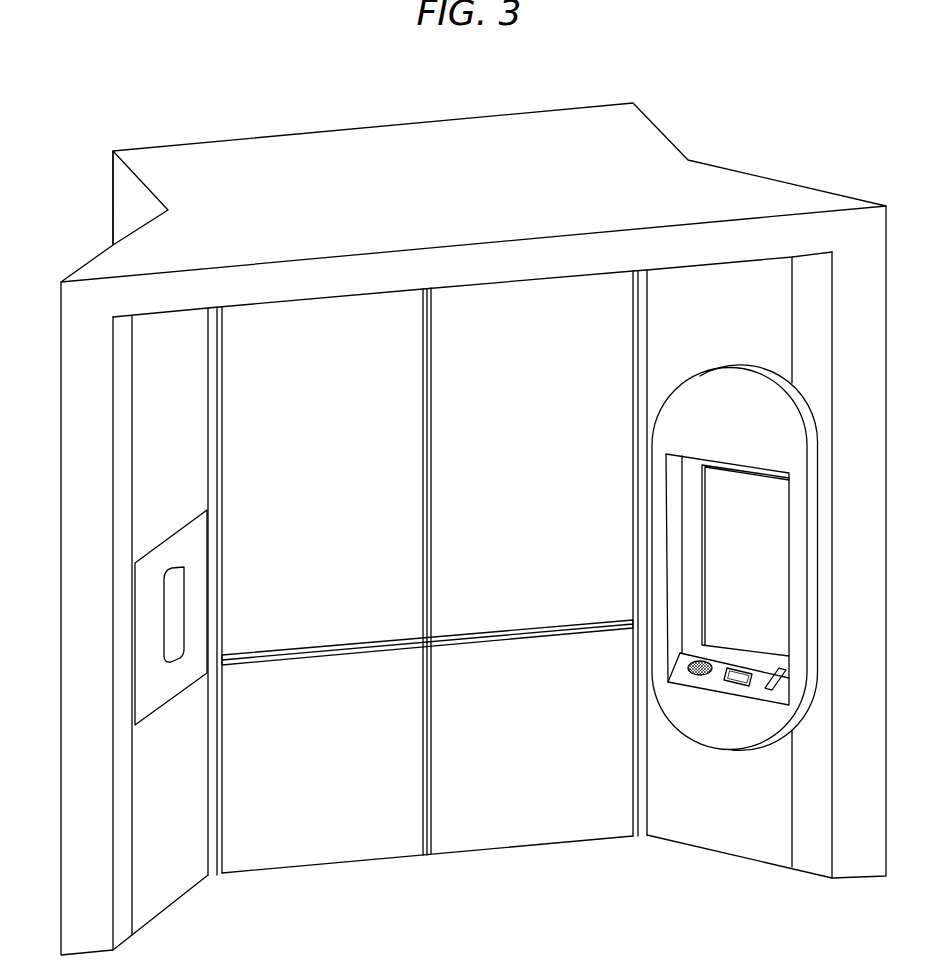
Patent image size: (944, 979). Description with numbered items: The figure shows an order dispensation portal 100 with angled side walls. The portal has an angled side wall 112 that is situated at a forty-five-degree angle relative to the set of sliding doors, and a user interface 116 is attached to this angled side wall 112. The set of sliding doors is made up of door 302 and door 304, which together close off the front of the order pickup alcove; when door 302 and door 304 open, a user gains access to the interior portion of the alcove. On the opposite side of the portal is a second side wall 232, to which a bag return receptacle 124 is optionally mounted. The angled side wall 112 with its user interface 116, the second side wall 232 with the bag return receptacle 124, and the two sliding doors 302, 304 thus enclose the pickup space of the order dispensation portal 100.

The order dispensation portal 100 is at (448, 502).
The angled side wall 112 is at (685, 334).
The user interface 116 is at (706, 734).
The bag return receptacle 124 is at (158, 625).
The second side wall 232 is at (116, 628).
The door 302 is at (303, 550).
The door 304 is at (519, 523).